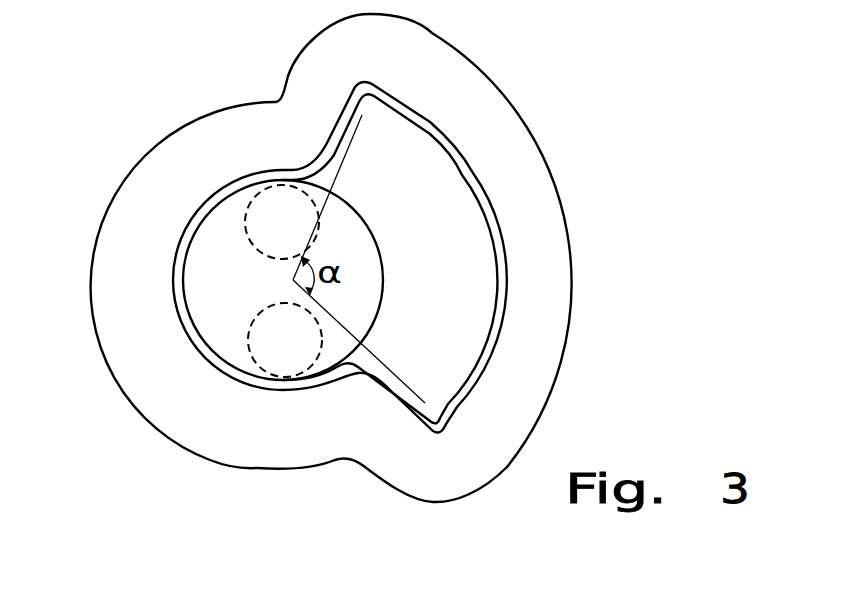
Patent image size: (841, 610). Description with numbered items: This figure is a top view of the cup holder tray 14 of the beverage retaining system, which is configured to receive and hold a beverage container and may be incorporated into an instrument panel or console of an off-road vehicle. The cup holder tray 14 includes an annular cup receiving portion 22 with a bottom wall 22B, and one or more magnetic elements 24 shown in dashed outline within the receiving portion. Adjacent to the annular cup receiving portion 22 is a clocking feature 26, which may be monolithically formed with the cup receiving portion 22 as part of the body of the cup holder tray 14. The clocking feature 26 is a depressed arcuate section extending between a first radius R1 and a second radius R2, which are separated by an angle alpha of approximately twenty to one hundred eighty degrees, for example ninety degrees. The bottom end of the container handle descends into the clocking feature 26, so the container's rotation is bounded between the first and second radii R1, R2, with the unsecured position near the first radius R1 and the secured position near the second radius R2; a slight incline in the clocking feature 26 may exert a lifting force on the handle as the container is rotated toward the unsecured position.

The cup holder tray 14 is at (173, 416).
The annular cup receiving portion 22 is at (190, 262).
The bottom wall 22B is at (218, 307).
The magnetic elements 24 is at (268, 309).
The clocking feature 26 is at (455, 249).
The first radius R1 is at (340, 322).
The second radius R2 is at (323, 203).